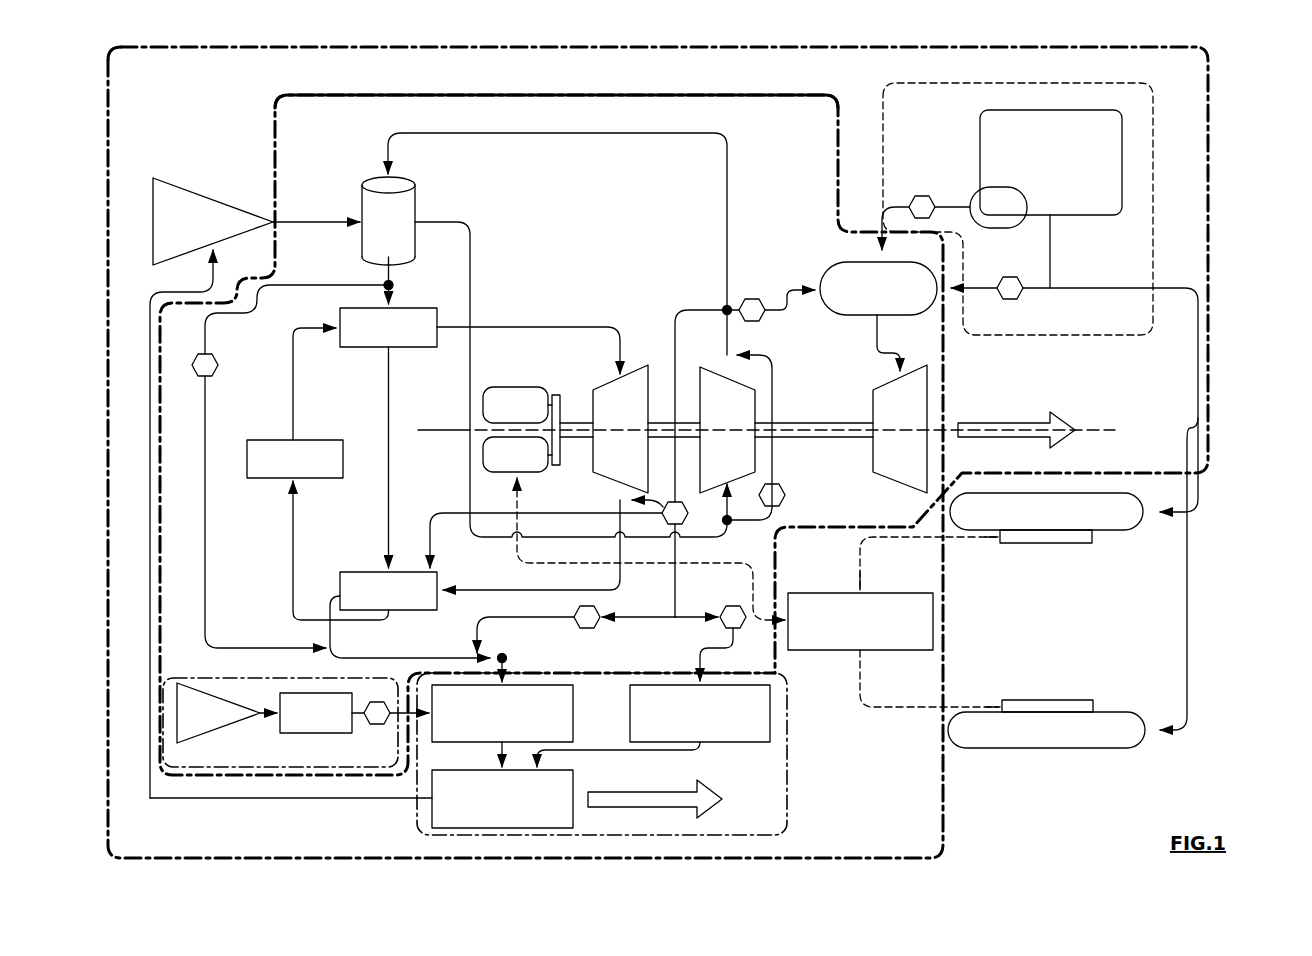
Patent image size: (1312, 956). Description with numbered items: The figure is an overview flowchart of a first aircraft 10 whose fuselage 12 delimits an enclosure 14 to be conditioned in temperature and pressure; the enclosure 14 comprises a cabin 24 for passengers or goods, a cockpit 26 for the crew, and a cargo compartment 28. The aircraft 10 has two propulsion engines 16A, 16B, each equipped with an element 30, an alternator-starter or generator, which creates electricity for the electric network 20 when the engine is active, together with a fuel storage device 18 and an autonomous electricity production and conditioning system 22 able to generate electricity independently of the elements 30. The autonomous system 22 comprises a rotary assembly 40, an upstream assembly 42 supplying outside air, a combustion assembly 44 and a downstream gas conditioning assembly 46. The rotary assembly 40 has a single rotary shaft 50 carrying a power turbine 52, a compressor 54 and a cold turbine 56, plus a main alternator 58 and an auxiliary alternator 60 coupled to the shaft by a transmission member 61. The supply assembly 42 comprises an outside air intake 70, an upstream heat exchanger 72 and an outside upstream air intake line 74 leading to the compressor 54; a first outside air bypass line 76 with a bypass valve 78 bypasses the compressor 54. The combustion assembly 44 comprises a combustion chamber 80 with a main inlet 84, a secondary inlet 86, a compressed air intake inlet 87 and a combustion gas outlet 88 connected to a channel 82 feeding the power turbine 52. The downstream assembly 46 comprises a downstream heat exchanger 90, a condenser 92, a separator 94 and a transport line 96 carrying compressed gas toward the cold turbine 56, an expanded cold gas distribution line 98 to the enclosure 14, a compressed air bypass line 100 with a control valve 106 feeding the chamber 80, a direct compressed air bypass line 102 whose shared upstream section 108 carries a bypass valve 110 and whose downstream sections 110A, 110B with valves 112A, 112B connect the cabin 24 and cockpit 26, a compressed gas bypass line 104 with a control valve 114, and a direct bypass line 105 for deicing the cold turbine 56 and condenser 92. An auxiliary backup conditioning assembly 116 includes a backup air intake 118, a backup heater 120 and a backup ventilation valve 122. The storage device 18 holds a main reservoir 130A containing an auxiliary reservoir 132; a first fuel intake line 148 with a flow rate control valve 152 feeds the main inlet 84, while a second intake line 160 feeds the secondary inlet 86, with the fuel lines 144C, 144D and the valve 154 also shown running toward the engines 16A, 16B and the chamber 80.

The aircraft 10 is at (1212, 757).
The fuselage 12 is at (955, 800).
The enclosure 14 is at (787, 770).
The engine 16A is at (1135, 537).
The engine 16B is at (1080, 755).
The fuel storage device 18 is at (1160, 143).
The electric network 20 is at (940, 625).
The autonomous electricity production and conditioning system 22 is at (802, 88).
The cabin 24 is at (502, 711).
The cockpit 26 is at (653, 726).
The cargo compartment 28 is at (361, 799).
The element 30 is at (1072, 545).
The rotary assembly 40 is at (957, 382).
The upstream assembly for supplying outside air 42 is at (178, 160).
The combustion assembly 44 is at (805, 235).
The downstream gas conditioning assembly 46 is at (498, 262).
The rotary shaft 50 is at (838, 420).
The power turbine 52 is at (900, 429).
The compressor 54 is at (727, 430).
The cold turbine 56 is at (620, 429).
The main alternator 58 is at (517, 454).
The auxiliary alternator 60 is at (517, 405).
The transmission member 61 is at (553, 393).
The outside air intake 70 is at (256, 221).
The upstream heat exchanger 72 is at (355, 190).
The outside upstream air intake line 74 is at (470, 228).
The first outside air bypass line 76 is at (772, 455).
The bypass valve 78 is at (786, 497).
The combustion chamber 80 is at (838, 262).
The channel 82 is at (875, 328).
The main inlet 84 is at (940, 270).
The secondary inlet 86 is at (878, 258).
The compressed air intake inlet 87 is at (812, 300).
The combustion gas outlet 88 is at (882, 318).
The downstream heat exchanger 90 is at (480, 438).
The condenser 92 is at (391, 569).
The separator 94 is at (295, 403).
The line for conveying compressed gas 96 is at (725, 177).
The expanded cold gas distribution line 98 is at (468, 598).
The compressed air bypass line 100 is at (780, 298).
The direct compressed air bypass line 102 is at (690, 308).
The compressed gas bypass line 104 is at (290, 290).
The direct bypass line 105 is at (566, 512).
The control valve 106 is at (750, 298).
The shared upstream section 108 is at (675, 560).
The bypass valve 110 is at (660, 513).
The downstream section 110A is at (655, 615).
The downstream section 110B is at (690, 615).
The valve 112A is at (575, 620).
The valve 112B is at (718, 622).
The control valve 114 is at (218, 370).
The auxiliary backup conditioning assembly 116 is at (273, 778).
The backup air intake 118 is at (227, 713).
The backup heater 120 is at (322, 713).
The backup ventilation valve 122 is at (372, 725).
The main reservoir 130A is at (1051, 162).
The auxiliary reservoir 132 is at (1000, 187).
The fuel line 144C is at (1205, 440).
The fuel line 144D is at (1190, 603).
The first fuel intake line 148 is at (1040, 288).
The flow rate control valve 152 is at (1025, 295).
The valve 154 is at (918, 197).
The second intake line 160 is at (947, 207).